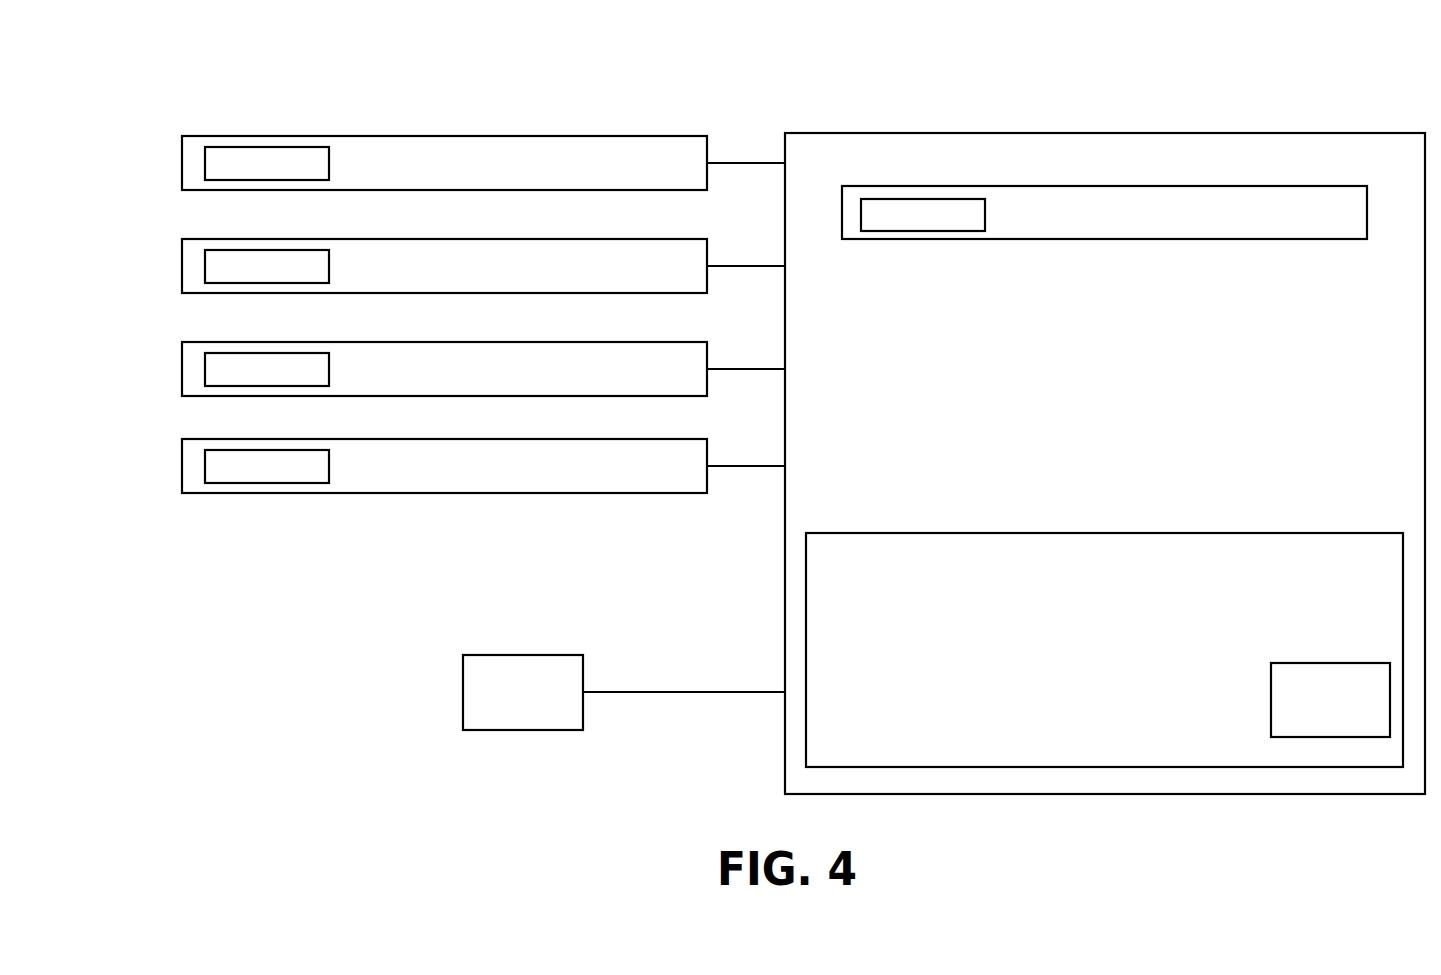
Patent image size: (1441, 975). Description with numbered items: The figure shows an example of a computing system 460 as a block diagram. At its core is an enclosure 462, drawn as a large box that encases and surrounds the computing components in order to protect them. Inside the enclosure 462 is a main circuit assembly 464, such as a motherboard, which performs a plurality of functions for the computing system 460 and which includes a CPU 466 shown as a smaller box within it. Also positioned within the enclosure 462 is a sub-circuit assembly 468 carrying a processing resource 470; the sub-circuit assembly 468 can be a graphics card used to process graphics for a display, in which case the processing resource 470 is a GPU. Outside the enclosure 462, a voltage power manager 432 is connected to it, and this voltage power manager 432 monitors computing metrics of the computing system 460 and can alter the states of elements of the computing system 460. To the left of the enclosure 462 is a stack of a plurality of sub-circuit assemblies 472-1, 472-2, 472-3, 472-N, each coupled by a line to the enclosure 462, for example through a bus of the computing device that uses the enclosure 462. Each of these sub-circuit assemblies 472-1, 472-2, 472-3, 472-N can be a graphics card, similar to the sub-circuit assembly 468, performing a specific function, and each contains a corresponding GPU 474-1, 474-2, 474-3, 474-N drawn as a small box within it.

The computing system 460 is at (1196, 69).
The enclosure 462 is at (1376, 133).
The sub-circuit assembly 468 is at (1080, 186).
The processing resource 470 is at (918, 210).
The main circuit assembly 464 is at (1091, 660).
The CPU 466 is at (1355, 710).
The voltage power manager 432 is at (543, 703).
The sub-circuit assembly 472-1 is at (182, 158).
The sub-circuit assembly 472-2 is at (182, 261).
The sub-circuit assembly 472-3 is at (182, 364).
The sub-circuit assembly 472-N is at (182, 461).
The GPU 474-1 is at (262, 160).
The GPU 474-2 is at (262, 263).
The GPU 474-3 is at (262, 366).
The GPU 474-N is at (262, 463).